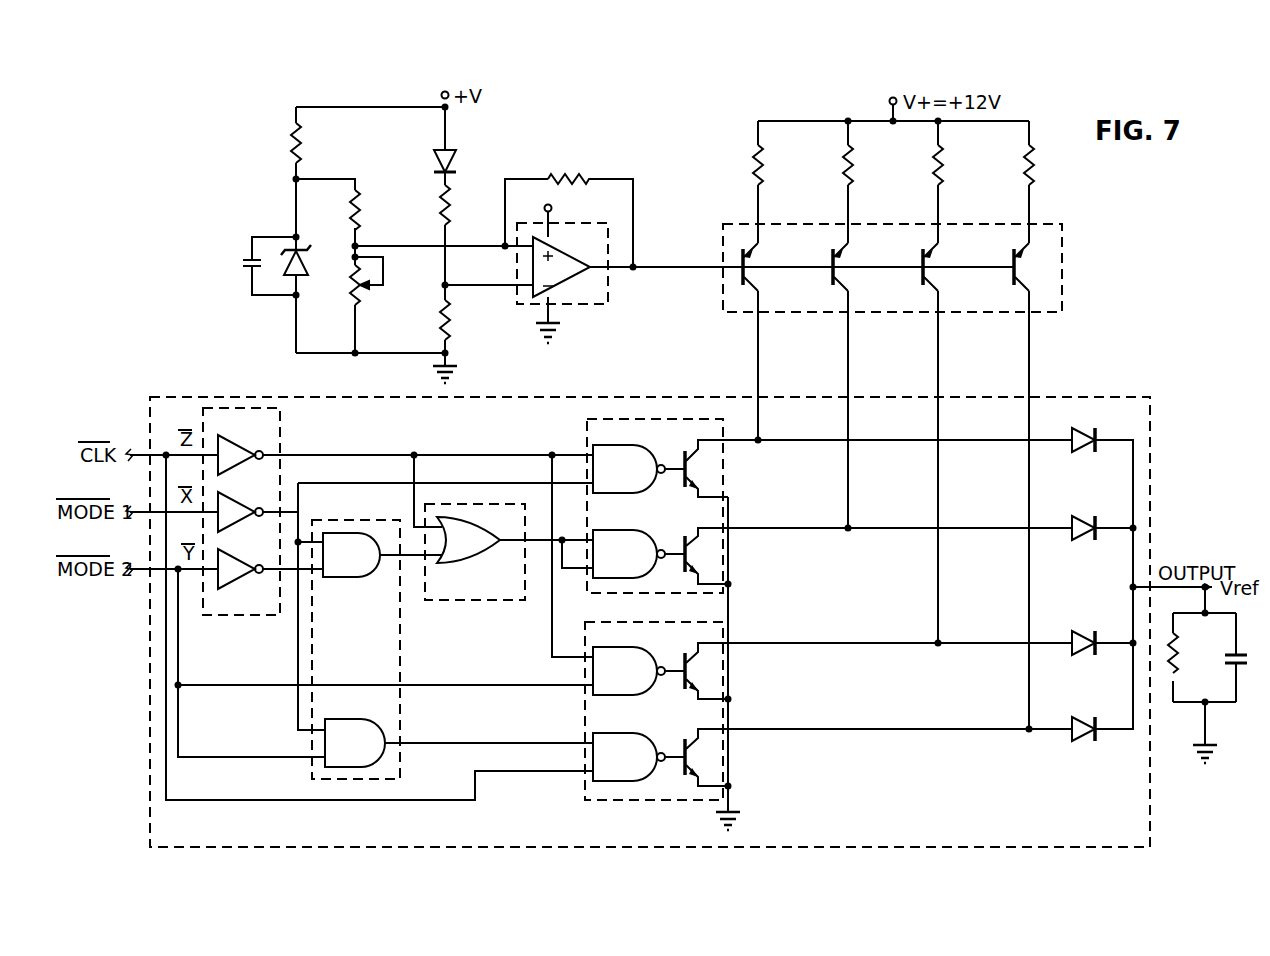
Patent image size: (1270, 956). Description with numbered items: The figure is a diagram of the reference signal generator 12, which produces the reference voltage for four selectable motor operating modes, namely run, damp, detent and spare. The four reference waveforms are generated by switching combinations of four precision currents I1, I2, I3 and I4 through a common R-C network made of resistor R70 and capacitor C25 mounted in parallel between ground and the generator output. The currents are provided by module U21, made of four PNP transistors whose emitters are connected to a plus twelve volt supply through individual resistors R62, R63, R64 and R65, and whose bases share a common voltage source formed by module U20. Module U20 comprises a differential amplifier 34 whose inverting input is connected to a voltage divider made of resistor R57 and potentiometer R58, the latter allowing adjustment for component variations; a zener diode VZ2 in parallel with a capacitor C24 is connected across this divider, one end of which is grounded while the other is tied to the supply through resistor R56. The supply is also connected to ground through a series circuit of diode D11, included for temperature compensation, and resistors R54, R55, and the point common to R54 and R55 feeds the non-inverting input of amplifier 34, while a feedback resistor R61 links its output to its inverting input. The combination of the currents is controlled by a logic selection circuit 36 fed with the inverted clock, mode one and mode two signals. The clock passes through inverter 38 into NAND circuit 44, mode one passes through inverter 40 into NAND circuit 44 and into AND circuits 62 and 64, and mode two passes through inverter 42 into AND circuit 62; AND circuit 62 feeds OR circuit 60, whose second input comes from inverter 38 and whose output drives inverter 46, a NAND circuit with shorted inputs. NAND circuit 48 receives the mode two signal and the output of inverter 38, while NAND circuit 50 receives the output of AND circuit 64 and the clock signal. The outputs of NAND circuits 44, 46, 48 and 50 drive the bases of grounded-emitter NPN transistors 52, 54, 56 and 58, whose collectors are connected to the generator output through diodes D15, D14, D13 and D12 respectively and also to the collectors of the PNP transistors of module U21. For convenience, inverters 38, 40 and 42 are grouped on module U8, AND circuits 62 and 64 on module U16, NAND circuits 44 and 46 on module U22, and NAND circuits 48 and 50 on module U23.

The resistor R56 is at (316, 143).
The resistor R57 is at (377, 210).
The potentiometer R58 is at (354, 285).
The capacitor C24 is at (240, 276).
The zener diode VZ2 is at (305, 262).
The diode D11 is at (448, 156).
The resistor R54 is at (467, 205).
The resistor R55 is at (467, 320).
The feedback resistor R61 is at (585, 174).
The differential amplifier 34 is at (560, 260).
The module U20 is at (576, 282).
The resistor R62 is at (779, 165).
The resistor R63 is at (869, 165).
The resistor R64 is at (959, 165).
The resistor R65 is at (1050, 165).
The module U21 is at (1062, 268).
The precision current I1 is at (756, 387).
The precision current I2 is at (846, 387).
The precision current I3 is at (936, 387).
The precision current I4 is at (1027, 387).
The reference signal generator 12 is at (1150, 368).
The logic selection circuit 36 is at (1150, 826).
The module U8 is at (280, 452).
The inverter 38 is at (237, 447).
The inverter 40 is at (237, 504).
The inverter 42 is at (233, 561).
The module U16 is at (400, 680).
The AND circuit 62 is at (355, 574).
The AND circuit 64 is at (372, 733).
The OR circuit 60 is at (480, 552).
The module U22 is at (597, 596).
The NAND circuit 44 is at (646, 459).
The inverter 46 is at (641, 544).
The NPN transistor 52 is at (698, 471).
The NPN transistor 54 is at (700, 560).
The module U23 is at (634, 724).
The NAND circuit 48 is at (646, 661).
The NAND circuit 50 is at (646, 744).
The NPN transistor 56 is at (698, 677).
The NPN transistor 58 is at (698, 763).
The diode D15 is at (1085, 430).
The diode D14 is at (1085, 518).
The diode D13 is at (1085, 633).
The diode D12 is at (1085, 720).
The resistor R70 is at (1180, 657).
The capacitor C25 is at (1226, 661).